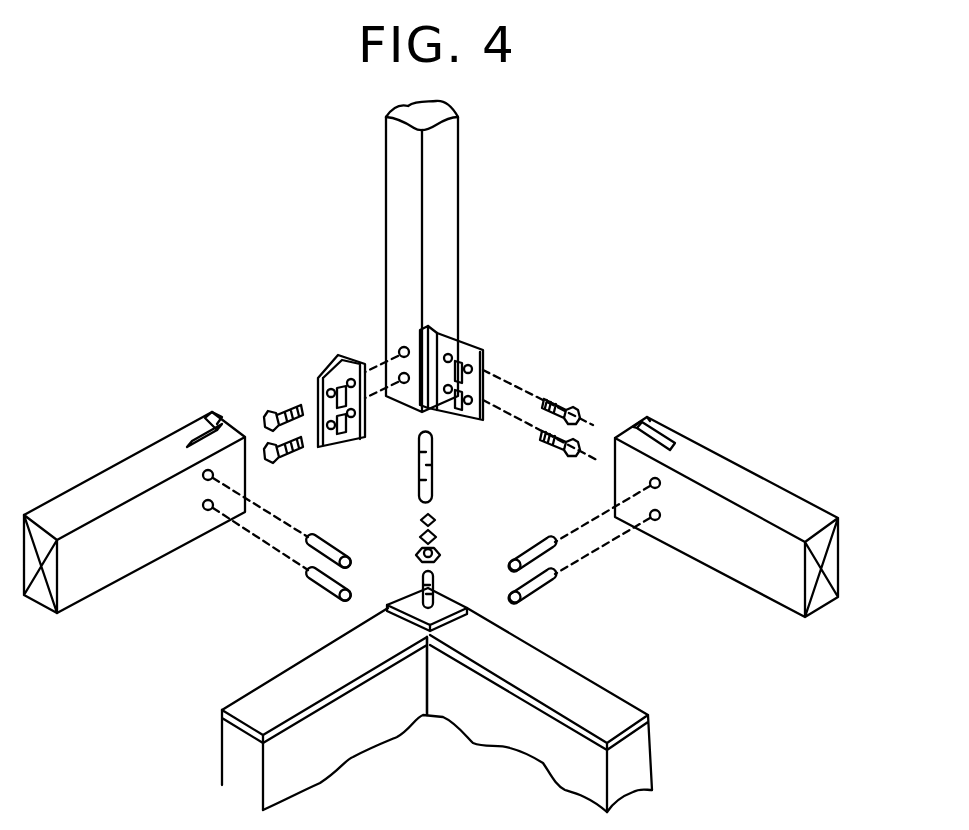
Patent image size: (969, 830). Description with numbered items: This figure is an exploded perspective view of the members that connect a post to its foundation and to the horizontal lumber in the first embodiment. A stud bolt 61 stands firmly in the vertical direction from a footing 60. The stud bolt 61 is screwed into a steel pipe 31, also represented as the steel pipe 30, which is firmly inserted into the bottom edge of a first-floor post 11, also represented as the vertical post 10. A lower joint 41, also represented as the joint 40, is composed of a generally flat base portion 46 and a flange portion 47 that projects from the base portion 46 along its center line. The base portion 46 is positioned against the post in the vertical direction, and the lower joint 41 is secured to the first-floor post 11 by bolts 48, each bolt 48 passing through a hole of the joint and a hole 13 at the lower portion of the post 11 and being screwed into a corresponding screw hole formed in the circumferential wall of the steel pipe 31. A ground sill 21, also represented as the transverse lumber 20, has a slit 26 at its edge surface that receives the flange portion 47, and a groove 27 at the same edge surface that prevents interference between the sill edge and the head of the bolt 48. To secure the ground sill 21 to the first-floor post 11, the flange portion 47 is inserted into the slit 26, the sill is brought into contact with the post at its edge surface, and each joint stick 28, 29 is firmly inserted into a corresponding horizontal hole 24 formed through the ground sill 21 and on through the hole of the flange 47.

The vertical post 10 is at (402, 188).
The first-floor post 11 is at (351, 256).
The post holes 13 is at (420, 328).
The transverse lumber 20 is at (790, 514).
The ground sill 21 is at (476, 514).
The horizontal hole 24 is at (203, 476).
The slit 26 is at (197, 443).
The groove 27 is at (222, 430).
The joint stick 28 is at (439, 566).
The joint stick 29 is at (337, 552).
The steel pipe 30 is at (436, 478).
The steel pipe 31 is at (543, 550).
The joint 40 is at (477, 338).
The lower joint 41 is at (514, 357).
The base portion 46 is at (340, 352).
The flange portion 47 is at (318, 378).
The bolt 48 is at (568, 400).
The footing 60 is at (627, 764).
The stud bolt 61 is at (434, 598).